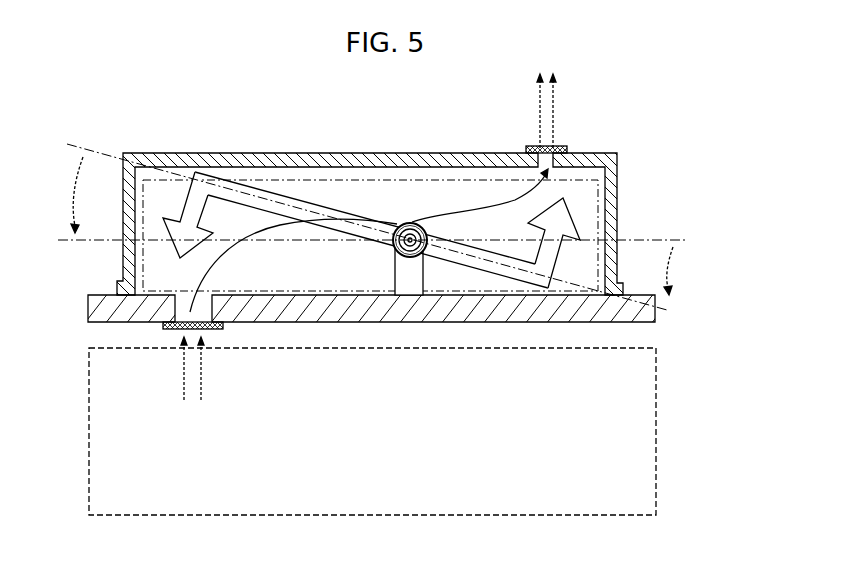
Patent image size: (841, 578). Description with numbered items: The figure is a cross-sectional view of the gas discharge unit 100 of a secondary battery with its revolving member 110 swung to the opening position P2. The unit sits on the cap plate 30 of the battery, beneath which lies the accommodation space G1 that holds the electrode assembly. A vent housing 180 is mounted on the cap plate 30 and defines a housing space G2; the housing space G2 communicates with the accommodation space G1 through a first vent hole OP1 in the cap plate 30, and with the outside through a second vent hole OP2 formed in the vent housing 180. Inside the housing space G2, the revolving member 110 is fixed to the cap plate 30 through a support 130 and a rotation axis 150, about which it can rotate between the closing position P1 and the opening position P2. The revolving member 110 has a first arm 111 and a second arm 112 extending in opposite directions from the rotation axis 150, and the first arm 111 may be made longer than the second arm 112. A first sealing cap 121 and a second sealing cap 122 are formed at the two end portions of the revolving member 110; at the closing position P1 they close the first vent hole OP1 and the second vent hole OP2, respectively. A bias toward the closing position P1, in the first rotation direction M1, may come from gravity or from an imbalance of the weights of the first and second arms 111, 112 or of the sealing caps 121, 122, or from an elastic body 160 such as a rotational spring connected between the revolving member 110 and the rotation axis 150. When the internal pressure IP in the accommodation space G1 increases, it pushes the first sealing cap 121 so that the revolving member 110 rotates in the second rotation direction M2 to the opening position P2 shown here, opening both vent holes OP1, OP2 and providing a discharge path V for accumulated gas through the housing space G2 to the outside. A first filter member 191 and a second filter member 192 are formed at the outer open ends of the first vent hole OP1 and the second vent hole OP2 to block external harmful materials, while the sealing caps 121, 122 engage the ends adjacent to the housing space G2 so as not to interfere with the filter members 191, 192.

The cap plate 30 is at (553, 310).
The gas discharge unit 100 is at (610, 153).
The revolving member 110 is at (283, 195).
The first arm 111 is at (340, 233).
The second arm 112 is at (483, 272).
The first sealing cap 121 is at (176, 246).
The second sealing cap 122 is at (580, 237).
The support 130 is at (405, 280).
The rotation axis 150 is at (406, 223).
The elastic body 160 is at (413, 223).
The vent housing 180 is at (600, 191).
The first filter member 191 is at (213, 329).
The second filter member 192 is at (565, 146).
The first vent hole OP1 is at (165, 312).
The second vent hole OP2 is at (536, 159).
The internal pressure IP is at (192, 381).
The discharge path V is at (468, 210).
The closing position P1 is at (370, 242).
The opening position P2 is at (369, 231).
The first rotation direction M1 is at (67, 195).
The second rotation direction M2 is at (679, 271).
The accommodation space G1 is at (656, 437).
The housing space G2 is at (604, 168).